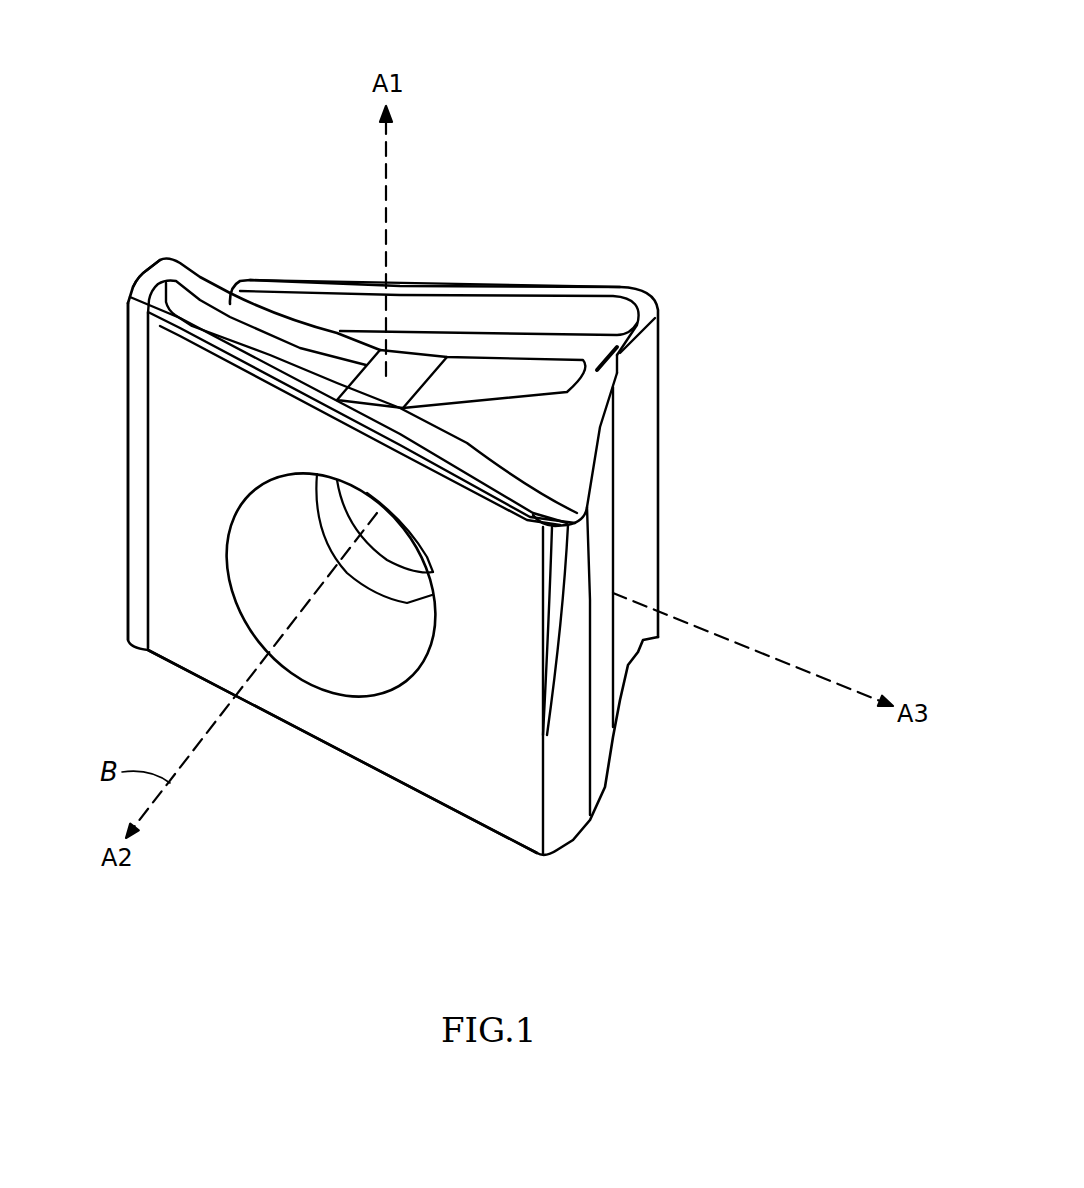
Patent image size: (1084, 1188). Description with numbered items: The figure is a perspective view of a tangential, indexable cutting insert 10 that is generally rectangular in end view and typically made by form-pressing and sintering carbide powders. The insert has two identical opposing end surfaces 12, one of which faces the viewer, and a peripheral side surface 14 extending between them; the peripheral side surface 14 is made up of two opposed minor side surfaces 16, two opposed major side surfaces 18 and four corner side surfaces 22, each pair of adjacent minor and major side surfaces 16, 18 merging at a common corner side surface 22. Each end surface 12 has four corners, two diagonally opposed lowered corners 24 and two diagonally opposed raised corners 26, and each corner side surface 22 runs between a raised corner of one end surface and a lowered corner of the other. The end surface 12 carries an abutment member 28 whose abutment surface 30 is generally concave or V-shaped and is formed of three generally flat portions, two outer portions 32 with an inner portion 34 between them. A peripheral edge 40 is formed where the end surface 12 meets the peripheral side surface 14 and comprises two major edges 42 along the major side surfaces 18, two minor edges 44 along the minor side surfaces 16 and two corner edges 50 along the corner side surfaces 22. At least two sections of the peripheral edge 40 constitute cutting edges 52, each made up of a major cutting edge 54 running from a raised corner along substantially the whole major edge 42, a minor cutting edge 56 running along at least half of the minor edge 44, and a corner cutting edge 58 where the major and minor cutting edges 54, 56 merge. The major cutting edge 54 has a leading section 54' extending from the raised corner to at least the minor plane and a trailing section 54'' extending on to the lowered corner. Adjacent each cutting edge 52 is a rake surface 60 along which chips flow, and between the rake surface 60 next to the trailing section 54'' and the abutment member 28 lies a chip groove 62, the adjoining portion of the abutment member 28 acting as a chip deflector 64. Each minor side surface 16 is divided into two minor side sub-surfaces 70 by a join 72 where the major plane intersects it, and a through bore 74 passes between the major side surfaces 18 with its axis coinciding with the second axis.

The cutting insert 10 is at (704, 90).
The end surface 12 is at (461, 304).
The peripheral side surface 14 is at (182, 637).
The minor side surface 16 is at (613, 580).
The major side surface 18 is at (493, 757).
The corner side surface 22 is at (130, 490).
The lowered corner 24 is at (112, 329).
The raised corner 26 is at (113, 642).
The abutment member 28 is at (304, 367).
The abutment surface 30 is at (276, 320).
The outer portion 32 is at (231, 323).
The inner portion 34 is at (401, 365).
The peripheral edge 40 is at (628, 374).
The major edge 42 is at (443, 335).
The minor edge 44 is at (157, 259).
The corner edge 50 is at (123, 300).
The cutting edge 52 is at (364, 272).
The major cutting edge 54 is at (435, 217).
The leading section 54' is at (339, 301).
The trailing section 54'' is at (313, 253).
The minor cutting edge 56 is at (138, 272).
The corner cutting edge 58 is at (125, 298).
The rake surface 60 is at (571, 325).
The chip groove 62 is at (641, 527).
The chip deflector 64 is at (565, 476).
The minor side sub-surface 70 is at (567, 502).
The join 72 is at (657, 613).
The through bore 74 is at (312, 648).